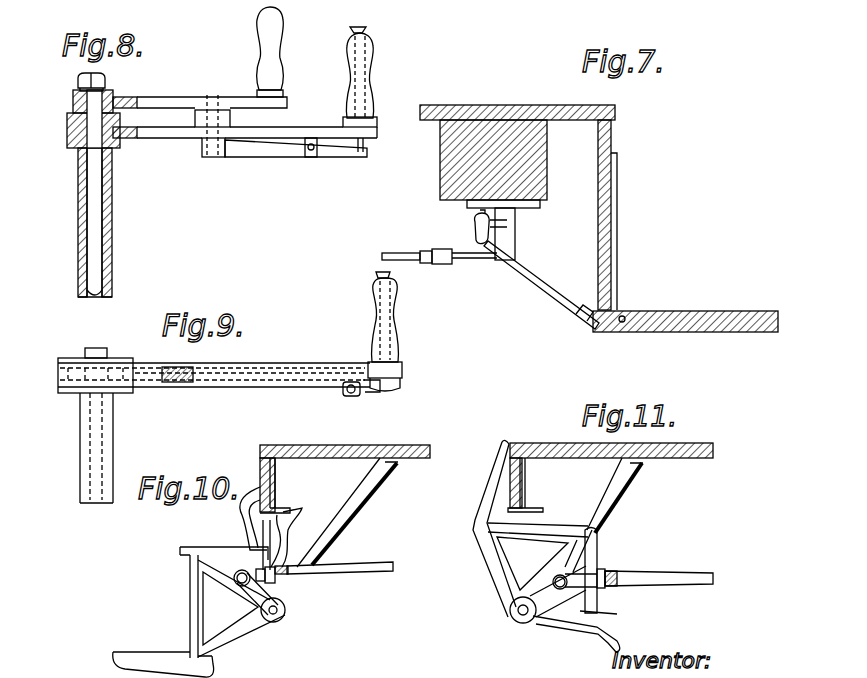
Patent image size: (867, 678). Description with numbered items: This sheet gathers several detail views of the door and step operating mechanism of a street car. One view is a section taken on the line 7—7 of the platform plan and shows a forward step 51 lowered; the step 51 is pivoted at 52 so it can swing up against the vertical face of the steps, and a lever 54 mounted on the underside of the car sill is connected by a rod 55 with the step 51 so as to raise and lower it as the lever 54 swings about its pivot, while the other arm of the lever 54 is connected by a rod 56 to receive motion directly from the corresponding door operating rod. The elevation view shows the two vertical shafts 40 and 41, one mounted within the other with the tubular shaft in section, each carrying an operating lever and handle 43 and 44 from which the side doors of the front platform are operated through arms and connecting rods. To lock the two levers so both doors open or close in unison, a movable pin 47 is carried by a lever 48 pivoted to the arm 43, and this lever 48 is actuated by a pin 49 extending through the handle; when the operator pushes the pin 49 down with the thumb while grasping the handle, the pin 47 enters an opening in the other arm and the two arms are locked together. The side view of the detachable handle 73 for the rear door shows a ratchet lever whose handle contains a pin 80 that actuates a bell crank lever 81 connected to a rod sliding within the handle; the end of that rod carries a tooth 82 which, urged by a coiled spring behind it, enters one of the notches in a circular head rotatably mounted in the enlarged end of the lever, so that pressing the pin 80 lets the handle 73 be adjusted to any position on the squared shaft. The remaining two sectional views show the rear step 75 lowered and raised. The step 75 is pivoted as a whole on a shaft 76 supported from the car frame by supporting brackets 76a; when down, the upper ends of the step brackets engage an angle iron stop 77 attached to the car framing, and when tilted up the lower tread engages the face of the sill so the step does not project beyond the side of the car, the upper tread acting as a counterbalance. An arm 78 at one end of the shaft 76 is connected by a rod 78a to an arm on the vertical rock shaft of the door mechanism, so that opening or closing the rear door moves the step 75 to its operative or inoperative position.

In FIG. 8, the section line 7 is at (290, 4).
In FIG. 8, the vertical shaft 40 is at (112, 263).
In FIG. 8, the vertical shaft 41 is at (92, 226).
In FIG. 8, the operating lever and handle 43 is at (348, 68).
In FIG. 8, the operating lever and handle 44 is at (263, 43).
In FIG. 8, the movable pin 47 is at (218, 98).
In FIG. 8, the lever 48 is at (266, 150).
In FIG. 8, the pin 49 is at (361, 30).
In FIG. 7, the step 51 is at (712, 312).
In FIG. 7, the pivot 52 is at (625, 313).
In FIG. 7, the lever 54 is at (516, 240).
In FIG. 7, the rod 55 is at (547, 288).
In FIG. 7, the rod 56 is at (401, 253).
In FIG. 9, the detachable handle 73 is at (290, 360).
In FIG. 10, the rear step 75 is at (191, 580).
In FIG. 11, the rear step 75 is at (477, 532).
In FIG. 10, the shaft 76 is at (286, 611).
In FIG. 11, the shaft 76 is at (517, 615).
In FIG. 10, the supporting brackets 76a is at (300, 562).
In FIG. 11, the supporting brackets 76a is at (612, 492).
In FIG. 10, the angle iron stop 77 is at (279, 503).
In FIG. 11, the angle iron stop 77 is at (536, 511).
In FIG. 10, the arm 78 is at (256, 606).
In FIG. 11, the arm 78 is at (512, 590).
In FIG. 10, the rod 78a is at (373, 560).
In FIG. 11, the rod 78a is at (651, 571).
In FIG. 9, the pin 80 is at (390, 275).
In FIG. 9, the bell crank lever 81 is at (356, 396).
In FIG. 9, the tooth 82 is at (134, 369).